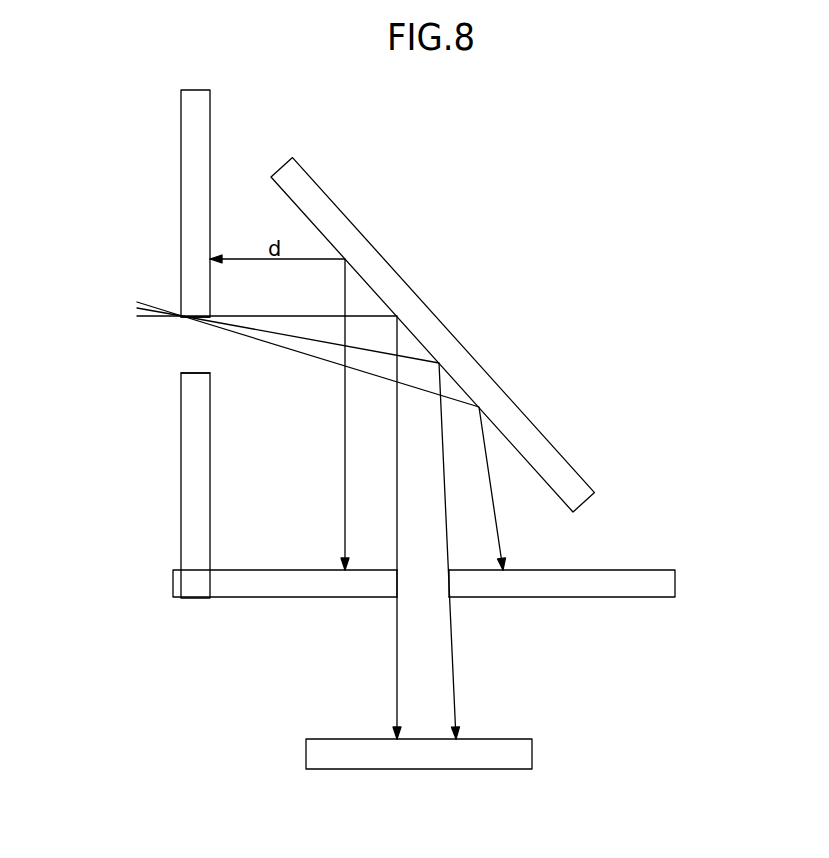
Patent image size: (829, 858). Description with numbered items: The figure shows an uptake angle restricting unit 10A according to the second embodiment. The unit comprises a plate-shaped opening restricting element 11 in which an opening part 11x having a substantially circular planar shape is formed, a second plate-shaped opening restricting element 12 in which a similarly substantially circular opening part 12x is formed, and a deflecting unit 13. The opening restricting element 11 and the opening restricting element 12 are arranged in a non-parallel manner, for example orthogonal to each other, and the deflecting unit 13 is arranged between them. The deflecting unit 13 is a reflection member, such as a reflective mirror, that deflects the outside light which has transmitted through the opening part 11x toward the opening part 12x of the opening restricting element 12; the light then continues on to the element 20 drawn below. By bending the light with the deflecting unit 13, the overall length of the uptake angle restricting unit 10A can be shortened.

The uptake angle restricting unit 10A is at (743, 73).
The opening restricting element 11 is at (211, 115).
The opening part 11x is at (197, 345).
The opening restricting element 12 is at (676, 583).
The opening part 12x is at (425, 585).
The deflecting unit 13 is at (440, 332).
The target / detector 20 is at (533, 752).